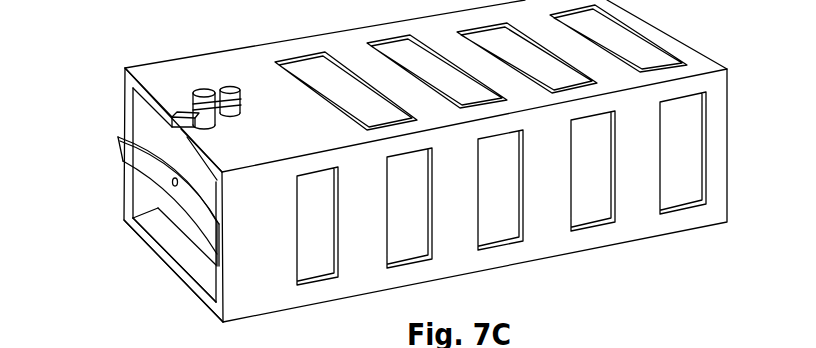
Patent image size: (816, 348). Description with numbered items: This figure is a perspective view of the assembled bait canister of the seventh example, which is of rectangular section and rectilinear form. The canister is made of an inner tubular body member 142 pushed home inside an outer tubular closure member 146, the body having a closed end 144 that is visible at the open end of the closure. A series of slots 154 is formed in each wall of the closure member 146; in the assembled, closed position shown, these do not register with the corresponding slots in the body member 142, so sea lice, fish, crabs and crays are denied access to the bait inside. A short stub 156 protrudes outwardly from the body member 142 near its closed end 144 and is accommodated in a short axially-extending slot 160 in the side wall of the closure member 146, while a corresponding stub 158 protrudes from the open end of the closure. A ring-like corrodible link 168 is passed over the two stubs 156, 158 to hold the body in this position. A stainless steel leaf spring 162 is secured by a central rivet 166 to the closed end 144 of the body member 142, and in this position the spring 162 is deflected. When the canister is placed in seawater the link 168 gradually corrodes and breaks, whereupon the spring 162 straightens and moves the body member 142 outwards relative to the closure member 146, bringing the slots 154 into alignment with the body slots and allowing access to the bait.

The inner tubular body member 142 is at (580, 148).
The closed end 144 is at (188, 225).
The outer tubular closure member 146 is at (194, 280).
The slots 154 is at (477, 29).
The stub 156 is at (200, 88).
The stub 158 is at (227, 88).
The axially-extending slot 160 is at (183, 117).
The leaf spring 162 is at (121, 150).
The central rivet 166 is at (172, 183).
The corrodible link 168 is at (218, 113).